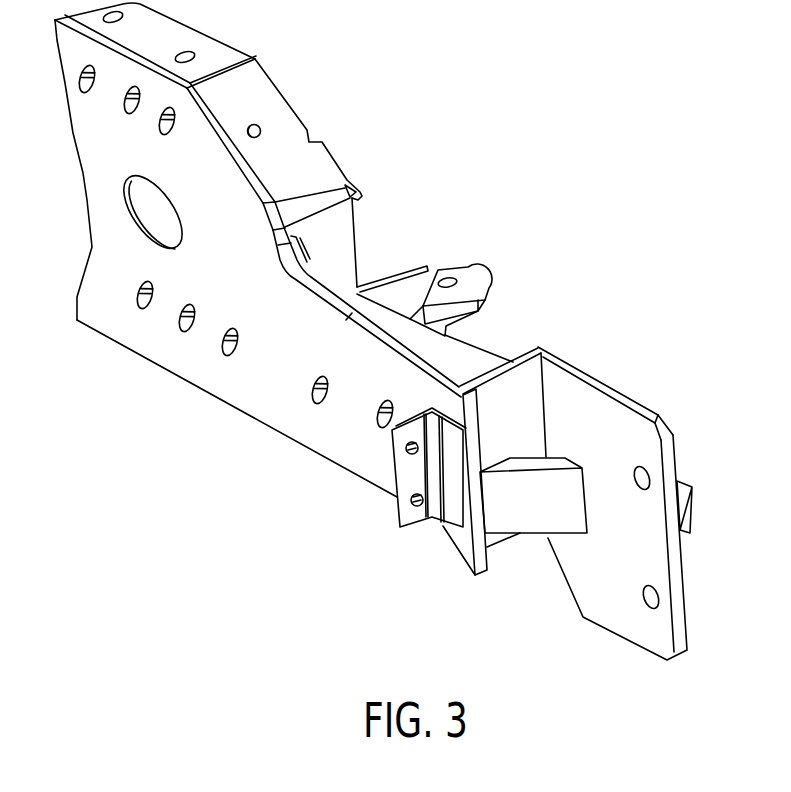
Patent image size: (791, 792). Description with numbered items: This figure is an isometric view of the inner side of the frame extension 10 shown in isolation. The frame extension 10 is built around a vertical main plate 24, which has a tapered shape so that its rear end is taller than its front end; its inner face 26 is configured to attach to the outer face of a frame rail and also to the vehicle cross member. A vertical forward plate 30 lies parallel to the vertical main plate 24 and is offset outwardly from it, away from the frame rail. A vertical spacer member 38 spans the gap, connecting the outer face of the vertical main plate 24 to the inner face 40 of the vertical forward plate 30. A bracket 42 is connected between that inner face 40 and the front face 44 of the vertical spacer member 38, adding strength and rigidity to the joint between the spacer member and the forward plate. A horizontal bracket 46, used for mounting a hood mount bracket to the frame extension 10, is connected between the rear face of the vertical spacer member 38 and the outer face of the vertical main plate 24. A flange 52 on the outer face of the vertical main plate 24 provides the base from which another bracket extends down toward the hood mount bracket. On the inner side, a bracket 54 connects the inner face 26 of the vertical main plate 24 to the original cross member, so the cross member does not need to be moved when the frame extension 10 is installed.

The frame extension 10 is at (373, 355).
The vertical main plate 24 is at (112, 295).
The inner face 26 is at (257, 386).
The vertical forward plate 30 is at (618, 600).
The vertical spacer member 38 is at (498, 403).
The inner face 40 is at (594, 557).
The bracket 42 is at (523, 515).
The front face 44 is at (527, 413).
The horizontal bracket 46 is at (393, 300).
The flange 52 is at (250, 103).
The bracket 54 is at (406, 476).